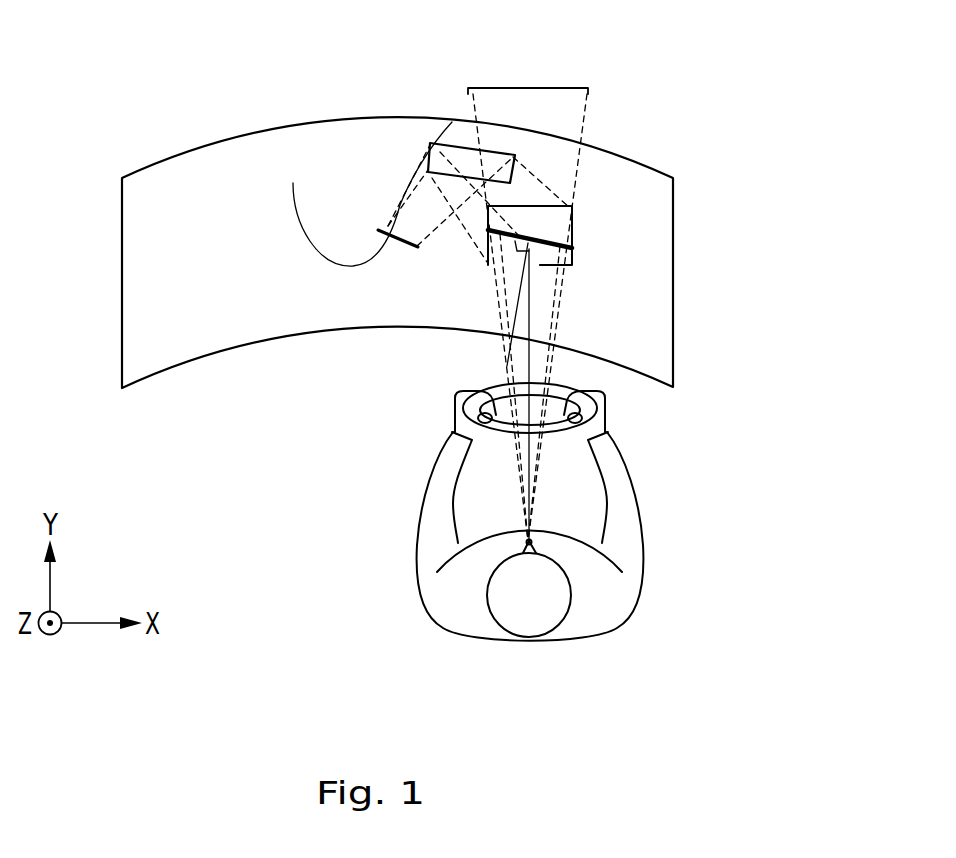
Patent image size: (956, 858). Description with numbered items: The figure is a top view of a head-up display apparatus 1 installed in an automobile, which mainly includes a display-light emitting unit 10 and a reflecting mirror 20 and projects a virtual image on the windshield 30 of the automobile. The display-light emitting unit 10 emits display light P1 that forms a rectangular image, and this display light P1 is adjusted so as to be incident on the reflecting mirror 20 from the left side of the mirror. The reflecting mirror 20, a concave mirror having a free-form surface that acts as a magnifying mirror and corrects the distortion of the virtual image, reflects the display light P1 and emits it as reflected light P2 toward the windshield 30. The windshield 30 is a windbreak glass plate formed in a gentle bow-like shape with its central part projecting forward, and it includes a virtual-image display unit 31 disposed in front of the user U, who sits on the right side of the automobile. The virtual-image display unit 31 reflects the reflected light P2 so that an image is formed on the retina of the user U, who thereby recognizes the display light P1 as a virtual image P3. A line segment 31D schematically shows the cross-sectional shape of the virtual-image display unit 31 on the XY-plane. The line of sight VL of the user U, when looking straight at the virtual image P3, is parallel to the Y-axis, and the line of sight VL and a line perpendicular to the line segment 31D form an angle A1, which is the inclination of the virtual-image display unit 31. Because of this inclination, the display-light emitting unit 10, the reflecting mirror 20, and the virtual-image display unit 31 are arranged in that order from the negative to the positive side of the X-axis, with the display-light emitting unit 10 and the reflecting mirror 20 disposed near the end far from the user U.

The head-up display apparatus 1 is at (398, 56).
The display-light emitting unit 10 is at (293, 183).
The reflecting mirror 20 is at (455, 153).
The windshield 30 is at (160, 173).
The virtual-image display unit 31 is at (573, 235).
The line segment 31D is at (529, 238).
The display light P1 is at (394, 184).
The reflected light P2 is at (456, 234).
The virtual image P3 is at (478, 88).
The line of sight VL is at (530, 313).
The angle A1 is at (563, 358).
The user U is at (530, 625).